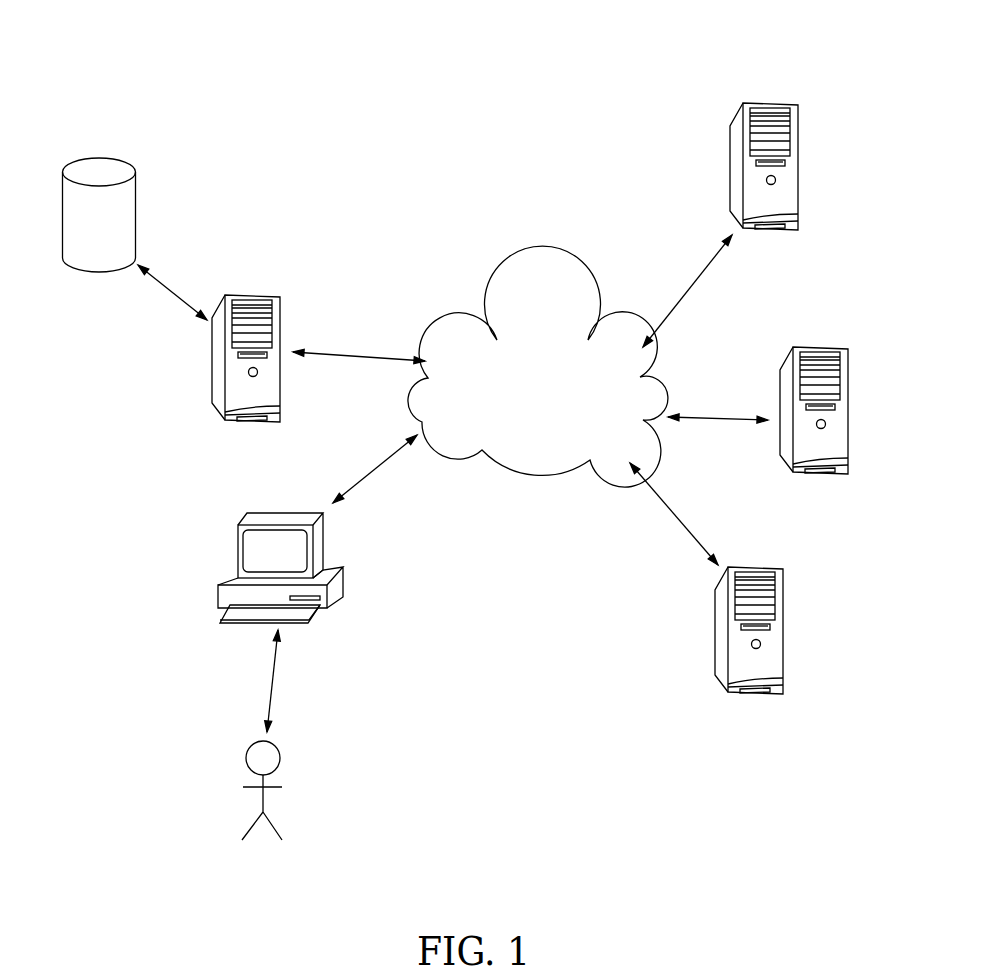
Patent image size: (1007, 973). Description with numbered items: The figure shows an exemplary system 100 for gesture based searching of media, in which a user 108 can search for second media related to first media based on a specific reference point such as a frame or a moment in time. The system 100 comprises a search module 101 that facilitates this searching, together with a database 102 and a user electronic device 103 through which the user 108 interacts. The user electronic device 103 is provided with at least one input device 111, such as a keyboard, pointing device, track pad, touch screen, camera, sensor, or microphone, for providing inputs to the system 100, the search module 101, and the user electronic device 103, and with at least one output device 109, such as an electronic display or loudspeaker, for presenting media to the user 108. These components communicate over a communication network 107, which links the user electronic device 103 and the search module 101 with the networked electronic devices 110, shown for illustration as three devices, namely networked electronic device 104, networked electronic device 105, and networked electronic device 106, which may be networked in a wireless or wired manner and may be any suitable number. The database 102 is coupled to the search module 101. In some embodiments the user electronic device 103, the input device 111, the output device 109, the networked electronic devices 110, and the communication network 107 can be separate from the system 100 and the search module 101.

The system 100 is at (497, 115).
The search module 101 is at (212, 367).
The database 102 is at (110, 170).
The user electronic device 103 is at (218, 595).
The networked electronic device 104 is at (730, 170).
The networked electronic device 105 is at (812, 348).
The networked electronic device 106 is at (717, 640).
The communication network 107 is at (543, 322).
The user 108 is at (283, 757).
The output device 109 is at (233, 528).
The networked electronic device 110 is at (813, 85).
The input device 111 is at (333, 619).